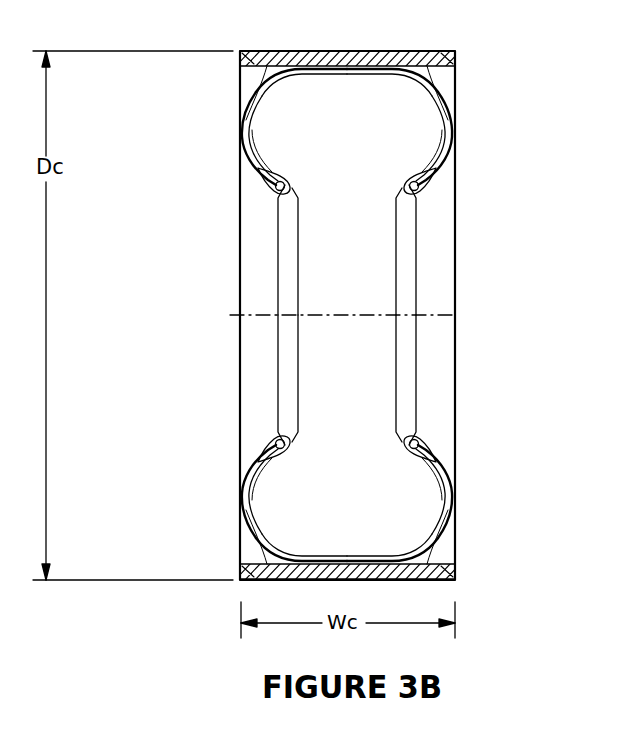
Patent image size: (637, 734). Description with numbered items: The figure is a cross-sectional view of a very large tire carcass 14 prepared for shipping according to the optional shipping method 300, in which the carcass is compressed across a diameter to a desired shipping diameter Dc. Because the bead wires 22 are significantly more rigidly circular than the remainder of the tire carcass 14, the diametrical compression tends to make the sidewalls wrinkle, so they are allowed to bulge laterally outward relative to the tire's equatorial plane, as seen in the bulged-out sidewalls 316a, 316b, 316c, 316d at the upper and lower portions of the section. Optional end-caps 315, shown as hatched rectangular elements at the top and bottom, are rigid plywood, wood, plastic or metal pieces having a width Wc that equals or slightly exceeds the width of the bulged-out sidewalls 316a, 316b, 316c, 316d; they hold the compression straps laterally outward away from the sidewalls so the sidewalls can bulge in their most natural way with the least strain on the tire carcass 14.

The shipping method 300 is at (200, 118).
The tire carcass 14 is at (425, 92).
The bead wires 22 is at (403, 182).
The end-caps 315 is at (432, 63).
The bulged-out sidewall 316a is at (240, 135).
The bulged-out sidewall 316b is at (455, 130).
The bulged-out sidewall 316c is at (240, 502).
The bulged-out sidewall 316d is at (453, 500).